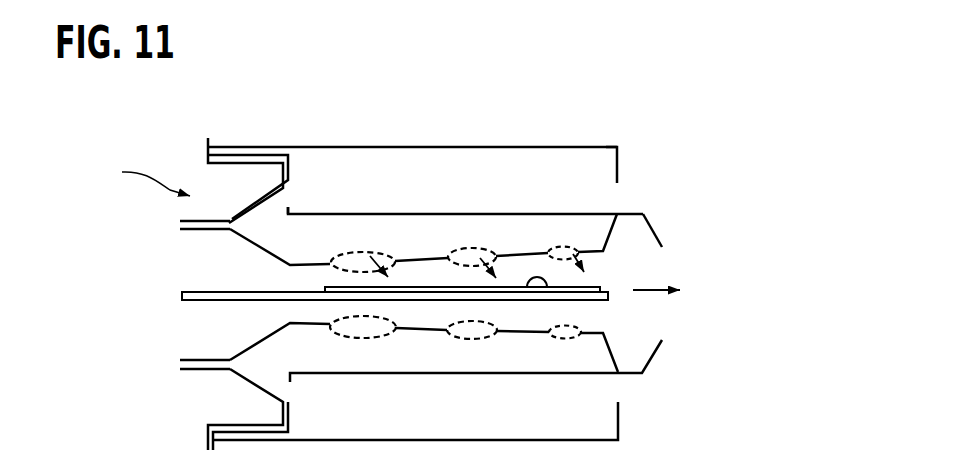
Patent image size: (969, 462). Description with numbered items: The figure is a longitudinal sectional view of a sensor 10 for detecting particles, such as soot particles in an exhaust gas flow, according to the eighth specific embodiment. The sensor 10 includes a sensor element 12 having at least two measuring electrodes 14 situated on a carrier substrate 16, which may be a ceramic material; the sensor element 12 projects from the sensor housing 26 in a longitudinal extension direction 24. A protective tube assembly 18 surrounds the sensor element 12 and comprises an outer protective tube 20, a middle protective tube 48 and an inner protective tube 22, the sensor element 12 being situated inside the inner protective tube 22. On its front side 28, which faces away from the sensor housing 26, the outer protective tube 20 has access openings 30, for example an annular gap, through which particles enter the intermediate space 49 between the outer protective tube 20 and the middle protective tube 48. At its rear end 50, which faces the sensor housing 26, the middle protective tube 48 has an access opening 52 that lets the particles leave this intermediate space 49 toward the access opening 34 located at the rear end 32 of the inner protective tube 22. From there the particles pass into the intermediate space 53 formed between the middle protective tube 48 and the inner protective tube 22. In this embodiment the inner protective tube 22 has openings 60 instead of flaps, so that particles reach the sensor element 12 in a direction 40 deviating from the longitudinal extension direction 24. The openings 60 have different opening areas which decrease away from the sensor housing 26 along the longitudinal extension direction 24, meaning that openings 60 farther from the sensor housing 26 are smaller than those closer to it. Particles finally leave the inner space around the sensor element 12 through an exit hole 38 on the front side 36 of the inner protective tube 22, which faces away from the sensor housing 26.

The sensor 10 is at (630, 110).
The sensor element 12 is at (202, 298).
The measuring electrodes 14 is at (535, 288).
The carrier substrate 16 is at (430, 296).
The protective tube assembly 18 is at (681, 161).
The outer protective tube 20 is at (592, 146).
The inner protective tube 22 is at (610, 247).
The longitudinal extension direction 24 is at (652, 290).
The sensor housing 26 is at (140, 175).
The front side 28 is at (618, 155).
The access openings 30 is at (618, 198).
The rear end 32 is at (197, 230).
The access opening 34 is at (282, 230).
The front side 36 is at (617, 357).
The exit hole 38 is at (662, 253).
The direction 40 is at (380, 252).
The middle protective tube 48 is at (652, 228).
The intermediate space 49 is at (445, 165).
The rear end 50 is at (291, 186).
The access opening 52 is at (291, 204).
The intermediate space 53 is at (279, 252).
The openings 60 is at (358, 258).